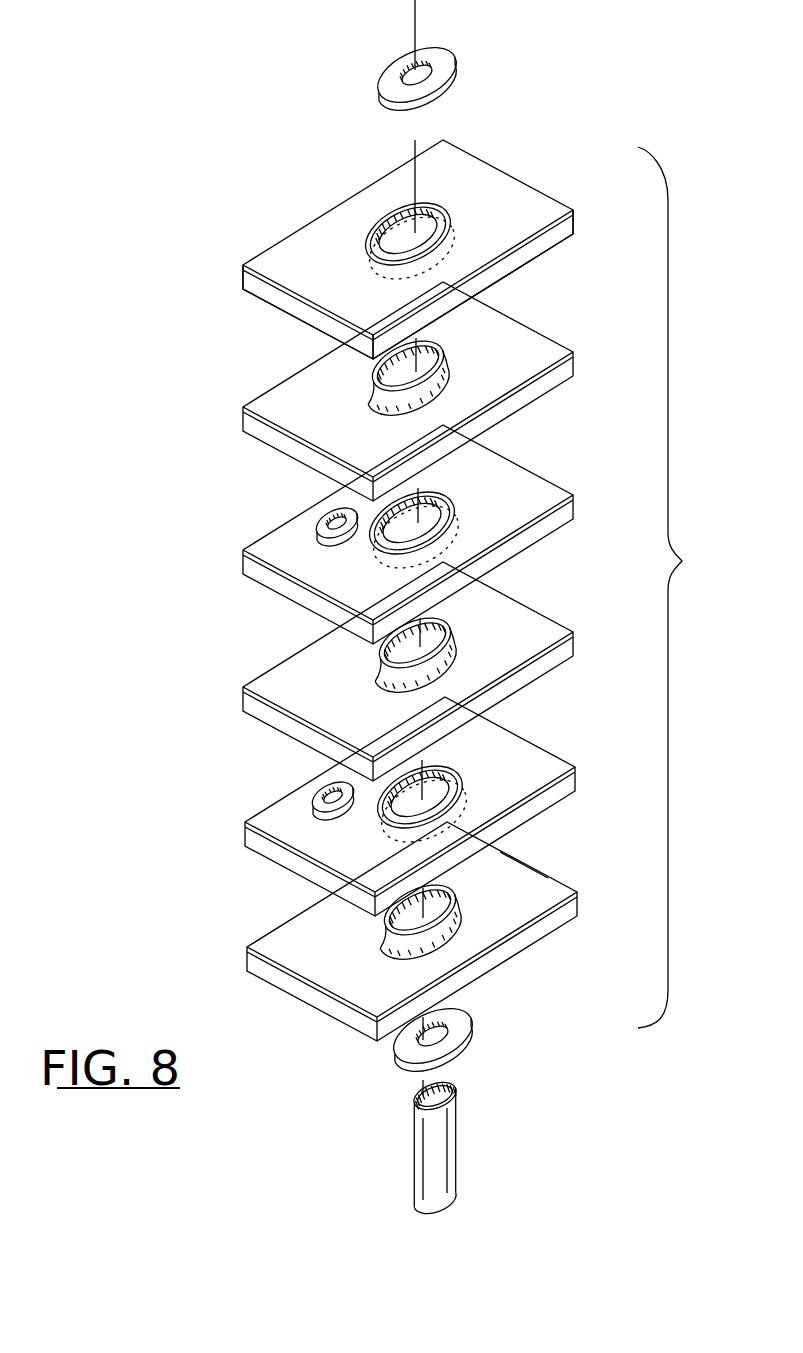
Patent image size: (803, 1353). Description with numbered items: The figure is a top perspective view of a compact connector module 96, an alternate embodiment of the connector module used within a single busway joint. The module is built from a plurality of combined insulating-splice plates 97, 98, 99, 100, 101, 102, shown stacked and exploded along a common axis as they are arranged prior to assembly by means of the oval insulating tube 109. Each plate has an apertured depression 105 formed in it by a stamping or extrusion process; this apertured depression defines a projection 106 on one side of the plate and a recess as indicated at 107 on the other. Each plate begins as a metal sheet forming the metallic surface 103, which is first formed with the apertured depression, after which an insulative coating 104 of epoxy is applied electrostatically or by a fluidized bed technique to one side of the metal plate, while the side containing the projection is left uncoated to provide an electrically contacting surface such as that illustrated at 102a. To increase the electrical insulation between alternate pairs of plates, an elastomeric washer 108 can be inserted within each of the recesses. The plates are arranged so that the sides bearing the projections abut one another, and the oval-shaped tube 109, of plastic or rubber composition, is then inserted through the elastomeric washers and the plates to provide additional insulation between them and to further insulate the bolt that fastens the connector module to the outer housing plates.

The compact connector module 96 is at (727, 574).
The insulating-splice plate 97 is at (401, 249).
The insulating-splice plate 98 is at (577, 363).
The insulating-splice plate 99 is at (577, 502).
The insulating-splice plate 100 is at (582, 643).
The insulating-splice plate 101 is at (583, 780).
The insulating-splice plate 102 is at (450, 931).
The electrically contacting surface 102a is at (548, 878).
The metallic surface 103 is at (250, 289).
The insulative coating 104 is at (248, 272).
The apertured depression 105 is at (412, 379).
The projection 106 is at (372, 385).
The recess 107 is at (447, 213).
The elastomeric washer 108 is at (443, 88).
The oval insulating tube 109 is at (460, 1133).